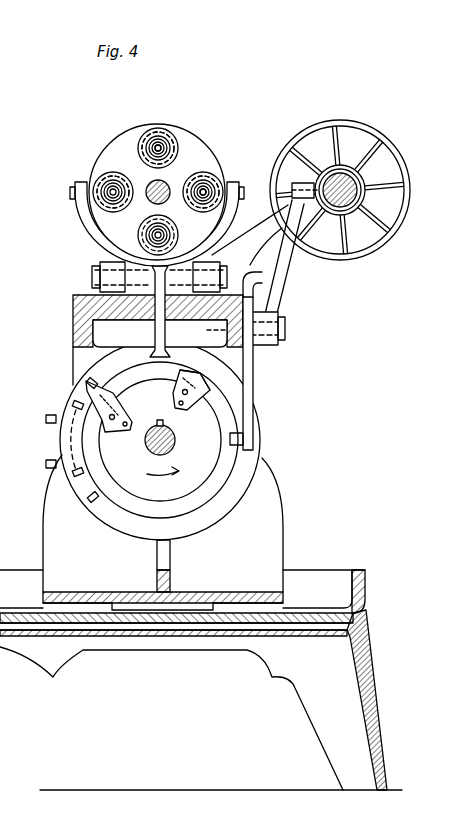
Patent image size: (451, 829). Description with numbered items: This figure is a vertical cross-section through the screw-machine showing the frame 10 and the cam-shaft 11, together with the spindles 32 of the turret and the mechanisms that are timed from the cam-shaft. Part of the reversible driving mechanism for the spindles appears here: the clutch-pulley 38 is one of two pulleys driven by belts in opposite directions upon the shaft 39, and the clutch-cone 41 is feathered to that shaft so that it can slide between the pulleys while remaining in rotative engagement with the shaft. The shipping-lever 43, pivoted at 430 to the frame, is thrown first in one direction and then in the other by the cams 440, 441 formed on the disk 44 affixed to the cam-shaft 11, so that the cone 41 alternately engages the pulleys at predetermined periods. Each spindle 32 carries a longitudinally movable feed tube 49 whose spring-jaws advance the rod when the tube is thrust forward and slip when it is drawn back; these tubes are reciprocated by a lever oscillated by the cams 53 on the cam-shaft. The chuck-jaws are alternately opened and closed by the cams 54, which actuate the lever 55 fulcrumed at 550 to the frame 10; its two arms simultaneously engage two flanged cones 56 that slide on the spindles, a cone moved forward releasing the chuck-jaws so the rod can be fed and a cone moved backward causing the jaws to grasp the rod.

The frame 10 is at (270, 528).
The cam-shaft 11 is at (175, 448).
The spindle 32 is at (157, 147).
The clutch-pulley 38 is at (407, 190).
The shaft 39 is at (350, 207).
The clutch-cone 41 is at (347, 173).
The shipping-lever 43 is at (280, 273).
The pivot 430 is at (285, 330).
The disk 44 is at (148, 401).
The cam 440 is at (199, 385).
The cam 441 is at (97, 403).
The tube 49 is at (167, 150).
The cam 53 is at (107, 360).
The cam 54 is at (80, 453).
The lever 55 is at (83, 218).
The fulcrum 550 is at (92, 278).
The flanged cone 56 is at (170, 143).